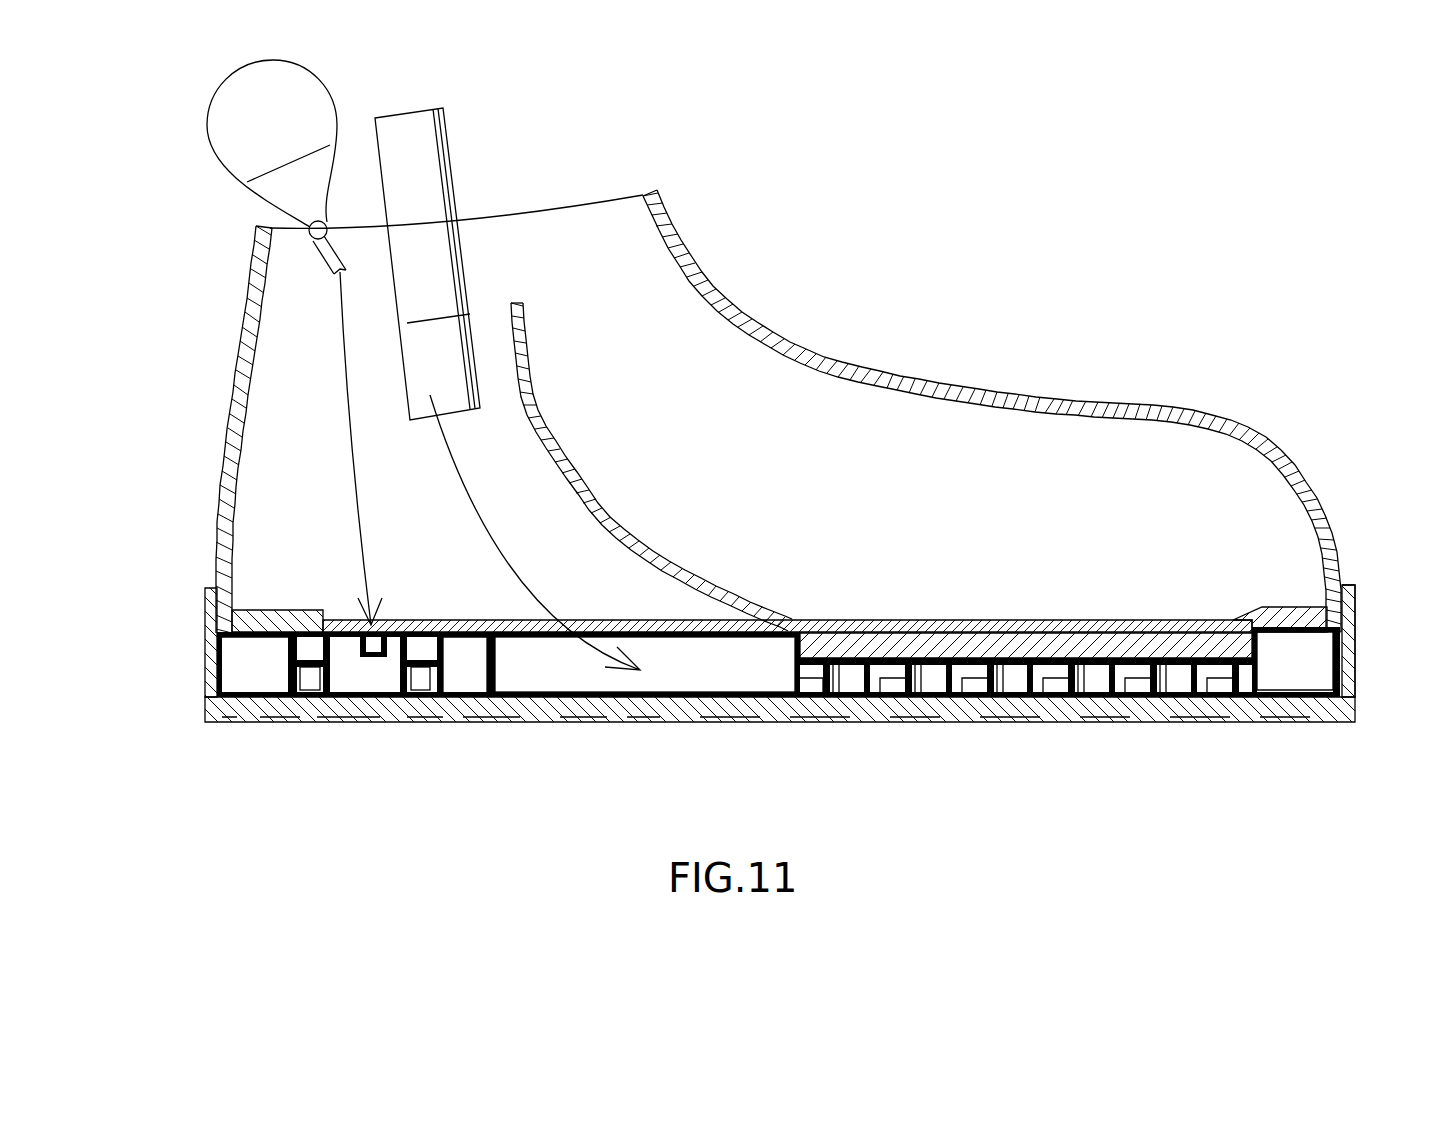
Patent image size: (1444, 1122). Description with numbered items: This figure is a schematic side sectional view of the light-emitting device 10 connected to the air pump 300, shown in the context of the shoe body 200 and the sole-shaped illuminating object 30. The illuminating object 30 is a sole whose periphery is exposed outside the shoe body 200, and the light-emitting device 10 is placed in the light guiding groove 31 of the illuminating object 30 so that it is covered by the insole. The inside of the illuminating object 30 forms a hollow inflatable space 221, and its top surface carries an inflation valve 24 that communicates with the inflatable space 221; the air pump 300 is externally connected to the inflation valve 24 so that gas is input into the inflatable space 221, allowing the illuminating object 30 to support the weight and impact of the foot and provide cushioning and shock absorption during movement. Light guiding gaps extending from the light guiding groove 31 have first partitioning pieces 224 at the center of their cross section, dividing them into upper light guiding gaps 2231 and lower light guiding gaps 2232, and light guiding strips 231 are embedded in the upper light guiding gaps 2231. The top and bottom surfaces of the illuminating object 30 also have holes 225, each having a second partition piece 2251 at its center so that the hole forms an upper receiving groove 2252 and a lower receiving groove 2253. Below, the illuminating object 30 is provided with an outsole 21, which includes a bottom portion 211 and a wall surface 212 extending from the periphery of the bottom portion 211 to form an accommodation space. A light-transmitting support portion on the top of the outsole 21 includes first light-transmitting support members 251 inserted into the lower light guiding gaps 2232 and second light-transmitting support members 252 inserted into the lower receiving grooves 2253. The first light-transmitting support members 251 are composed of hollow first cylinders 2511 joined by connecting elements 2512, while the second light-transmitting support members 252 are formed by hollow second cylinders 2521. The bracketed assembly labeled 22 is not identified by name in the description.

The light-emitting device 10 is at (418, 153).
The shoe body 200 is at (676, 240).
The air pump 300 is at (230, 107).
The illuminating object 30 is at (1360, 667).
The light guiding groove 31 is at (686, 672).
The outsole 21 is at (718, 675).
The bottom portion 211 is at (238, 725).
The wall surface 212 is at (203, 675).
The air chamber assembly 22 is at (770, 667).
The inflatable space 221 is at (230, 647).
The upper light guiding gaps 2231 is at (1266, 650).
The lower light guiding gaps 2232 is at (1268, 692).
The first partitioning pieces 224 is at (1266, 670).
The holes 225 is at (377, 669).
The second partition piece 2251 is at (310, 644).
The upper receiving grooves 2252 is at (324, 628).
The lower receiving grooves 2253 is at (280, 682).
The light guiding strips 231 is at (1102, 646).
The inflation valve 24 is at (392, 630).
The first light-transmitting support members 251 is at (1018, 744).
The hollow first cylinders 2511 is at (1010, 683).
The connecting elements 2512 is at (1055, 688).
The second light-transmitting support members 252 is at (361, 744).
The hollow second cylinders 2521 is at (420, 690).